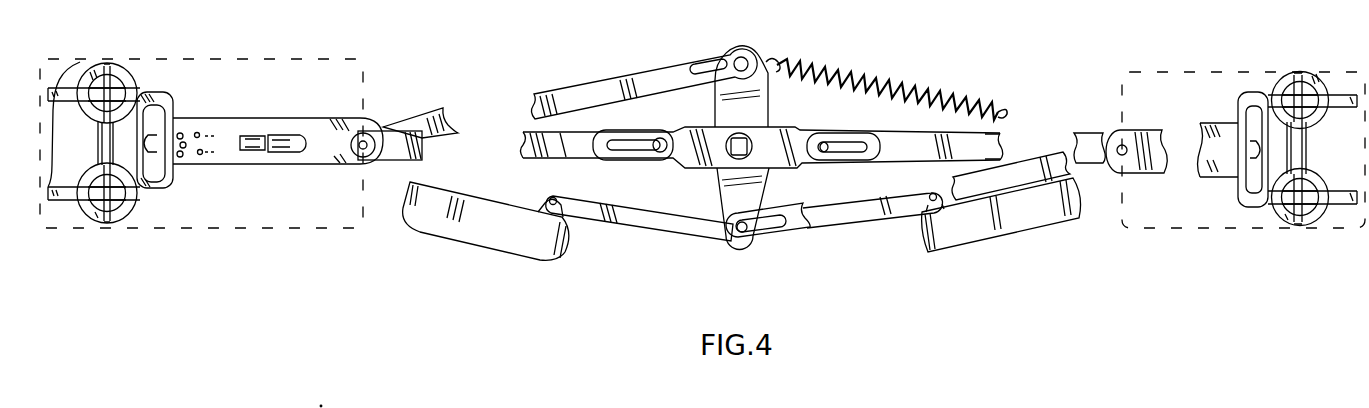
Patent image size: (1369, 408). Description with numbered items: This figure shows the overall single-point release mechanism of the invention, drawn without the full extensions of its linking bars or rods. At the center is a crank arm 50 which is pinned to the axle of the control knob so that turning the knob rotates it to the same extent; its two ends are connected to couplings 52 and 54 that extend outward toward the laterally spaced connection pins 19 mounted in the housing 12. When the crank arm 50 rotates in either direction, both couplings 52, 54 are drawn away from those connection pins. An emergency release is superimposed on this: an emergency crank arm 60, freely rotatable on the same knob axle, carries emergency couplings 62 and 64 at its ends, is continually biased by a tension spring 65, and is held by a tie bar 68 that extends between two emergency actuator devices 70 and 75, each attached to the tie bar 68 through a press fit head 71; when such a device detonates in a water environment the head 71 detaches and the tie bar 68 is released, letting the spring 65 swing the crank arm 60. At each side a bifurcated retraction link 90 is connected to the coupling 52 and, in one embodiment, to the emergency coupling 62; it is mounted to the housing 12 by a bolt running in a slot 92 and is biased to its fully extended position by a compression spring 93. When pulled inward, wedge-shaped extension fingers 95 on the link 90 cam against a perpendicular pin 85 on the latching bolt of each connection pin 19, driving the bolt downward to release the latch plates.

The housing 12 is at (200, 58).
The connection pin 19 is at (106, 86).
The crank arm 50 is at (790, 130).
The coupling 52 is at (425, 153).
The coupling 54 is at (1007, 135).
The emergency crank arm 60 is at (735, 90).
The emergency coupling 62 is at (443, 108).
The emergency coupling 64 is at (792, 209).
The tension spring 65 is at (842, 70).
The tie bar 68 is at (662, 218).
The emergency actuator device 70 is at (492, 233).
The press fit head 71 is at (542, 205).
The emergency actuator device 75 is at (970, 227).
The pin 85 is at (115, 172).
The retraction link 90 is at (236, 118).
The slot 92 is at (291, 133).
The compression spring 93 is at (196, 154).
The extension finger 95 is at (50, 90).